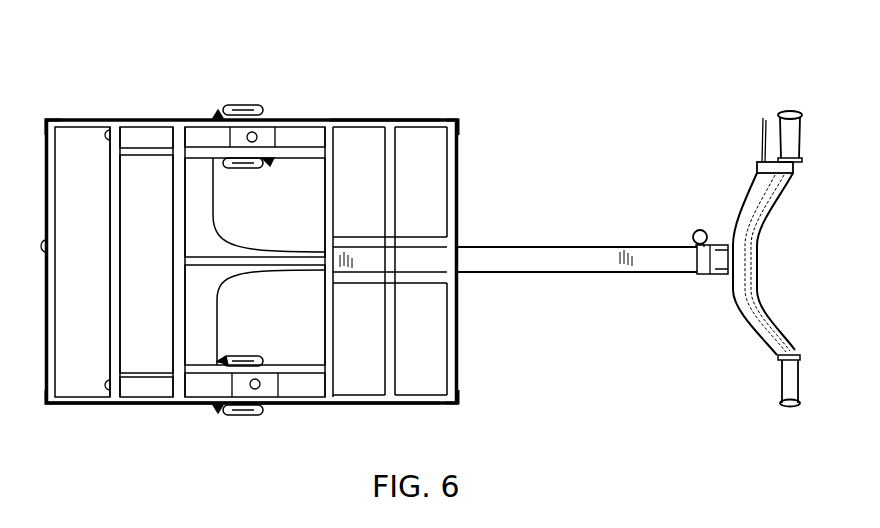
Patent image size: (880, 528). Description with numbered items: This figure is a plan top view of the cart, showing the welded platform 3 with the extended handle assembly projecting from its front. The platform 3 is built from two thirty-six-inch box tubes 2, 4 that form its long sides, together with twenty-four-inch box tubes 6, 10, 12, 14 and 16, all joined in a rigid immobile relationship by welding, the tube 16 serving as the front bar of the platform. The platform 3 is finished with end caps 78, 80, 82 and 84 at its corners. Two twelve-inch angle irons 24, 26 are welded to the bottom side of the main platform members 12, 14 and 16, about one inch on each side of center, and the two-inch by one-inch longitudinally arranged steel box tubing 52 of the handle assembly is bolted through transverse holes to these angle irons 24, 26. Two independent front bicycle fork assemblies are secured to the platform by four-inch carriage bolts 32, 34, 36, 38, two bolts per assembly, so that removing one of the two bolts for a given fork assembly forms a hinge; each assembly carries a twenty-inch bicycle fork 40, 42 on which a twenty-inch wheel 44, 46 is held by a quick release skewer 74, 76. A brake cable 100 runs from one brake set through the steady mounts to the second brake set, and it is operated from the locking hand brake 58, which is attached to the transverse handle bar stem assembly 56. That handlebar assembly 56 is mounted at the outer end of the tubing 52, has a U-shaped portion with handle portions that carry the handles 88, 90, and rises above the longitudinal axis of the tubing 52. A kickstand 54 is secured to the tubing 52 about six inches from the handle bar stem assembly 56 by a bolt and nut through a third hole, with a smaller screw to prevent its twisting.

The box tube 2 is at (90, 406).
The platform 3 is at (437, 118).
The box tube 4 is at (115, 120).
The box tube 6 is at (48, 246).
The box tube 10 is at (178, 122).
The main platform member 12 is at (330, 120).
The main platform member 14 is at (392, 122).
The front bar 16 is at (458, 170).
The angle iron 24 is at (440, 280).
The angle iron 26 is at (458, 236).
The carriage bolt 32 is at (243, 357).
The carriage bolt 34 is at (268, 362).
The carriage bolt 36 is at (250, 170).
The carriage bolt 38 is at (270, 168).
The bicycle fork 40 is at (248, 416).
The bicycle fork 42 is at (245, 105).
The wheel 44 is at (148, 396).
The wheel 46 is at (300, 127).
The longitudinal steel box tubing 52 is at (596, 276).
The kickstand 54 is at (695, 231).
The transverse handle bar stem assembly 56 is at (759, 228).
The locking hand brake 58 is at (758, 166).
The quick release skewer 74 is at (218, 413).
The quick release skewer 76 is at (218, 110).
The end cap 78 is at (458, 402).
The end cap 80 is at (458, 118).
The end cap 82 is at (46, 120).
The end cap 84 is at (46, 405).
The handle 88 is at (783, 381).
The handle 90 is at (780, 116).
The brake cable 100 is at (213, 196).